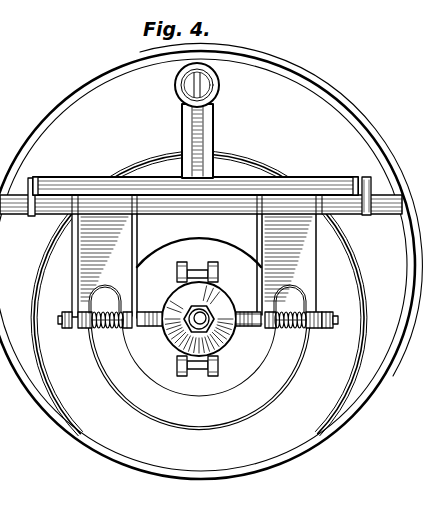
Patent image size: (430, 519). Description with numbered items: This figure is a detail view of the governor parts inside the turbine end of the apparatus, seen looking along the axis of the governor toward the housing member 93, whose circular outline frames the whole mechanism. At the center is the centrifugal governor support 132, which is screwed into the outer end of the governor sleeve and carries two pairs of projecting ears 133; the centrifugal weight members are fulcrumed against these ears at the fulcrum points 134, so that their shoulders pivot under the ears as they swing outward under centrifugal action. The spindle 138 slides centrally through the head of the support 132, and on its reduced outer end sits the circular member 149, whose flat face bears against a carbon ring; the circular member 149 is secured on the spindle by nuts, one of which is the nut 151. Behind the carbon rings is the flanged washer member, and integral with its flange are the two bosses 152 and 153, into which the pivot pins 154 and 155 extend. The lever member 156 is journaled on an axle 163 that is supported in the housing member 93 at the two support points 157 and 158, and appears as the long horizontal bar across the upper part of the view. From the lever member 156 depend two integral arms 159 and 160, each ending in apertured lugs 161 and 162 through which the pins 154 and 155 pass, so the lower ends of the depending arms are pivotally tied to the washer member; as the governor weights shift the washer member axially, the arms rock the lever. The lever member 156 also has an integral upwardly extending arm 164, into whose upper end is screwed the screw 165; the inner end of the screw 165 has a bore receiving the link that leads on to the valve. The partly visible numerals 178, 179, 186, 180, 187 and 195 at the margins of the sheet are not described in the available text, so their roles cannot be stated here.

The housing member 93 is at (331, 121).
The rim flange 195 is at (11, 426).
The centrifugal governor support 132 is at (163, 337).
The projecting ears 133 is at (178, 263).
The fulcrum points 134 is at (197, 270).
The spindle 138 is at (248, 381).
The circular member 149 is at (218, 302).
The nut 151 is at (165, 341).
The boss 152 is at (150, 309).
The boss 153 is at (240, 327).
The pivot pin 154 is at (61, 320).
The pivot pin 155 is at (300, 314).
The lever member 156 is at (229, 192).
The axle support point 157 is at (30, 186).
The axle support point 158 is at (370, 178).
The depending arm 159 is at (75, 239).
The depending arm 160 is at (301, 260).
The apertured lug 161 is at (92, 334).
The apertured lug 162 is at (326, 329).
The axle 163 is at (38, 179).
The upwardly extending arm 164 is at (203, 128).
The screw 165 is at (176, 86).
The part 178 is at (2, 52).
The part 179 is at (2, 78).
The part 186 is at (2, 100).
The part 180 is at (2, 120).
The part 187 is at (18, 132).